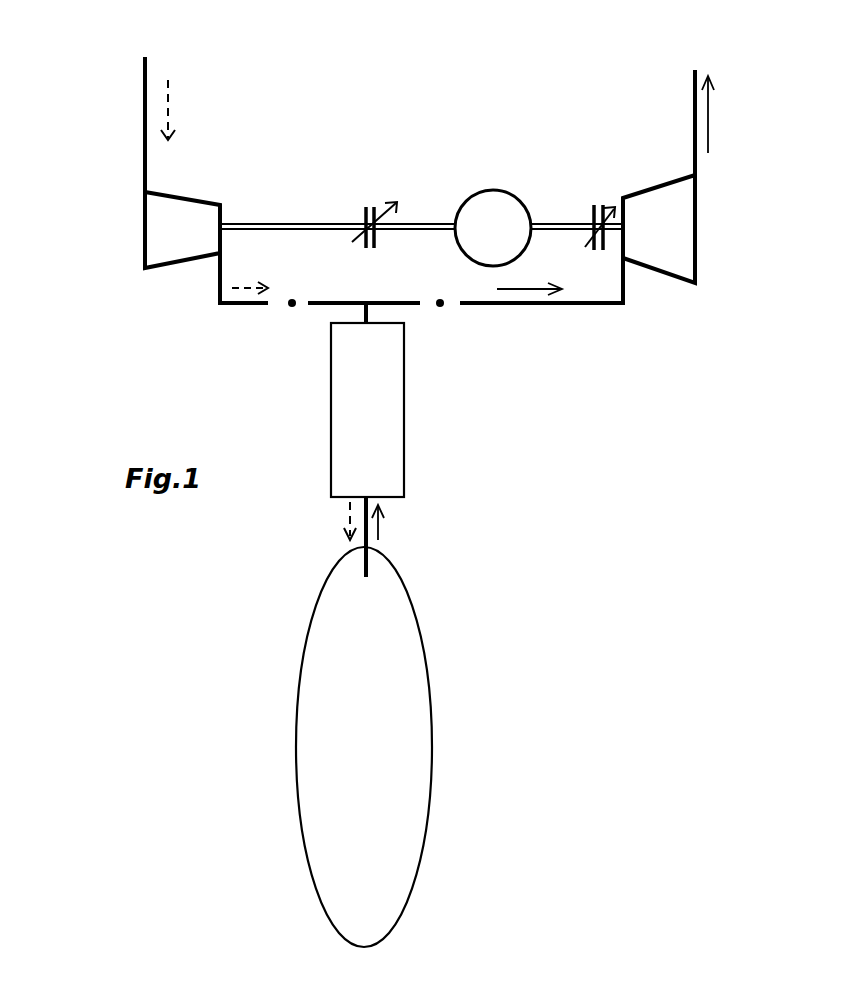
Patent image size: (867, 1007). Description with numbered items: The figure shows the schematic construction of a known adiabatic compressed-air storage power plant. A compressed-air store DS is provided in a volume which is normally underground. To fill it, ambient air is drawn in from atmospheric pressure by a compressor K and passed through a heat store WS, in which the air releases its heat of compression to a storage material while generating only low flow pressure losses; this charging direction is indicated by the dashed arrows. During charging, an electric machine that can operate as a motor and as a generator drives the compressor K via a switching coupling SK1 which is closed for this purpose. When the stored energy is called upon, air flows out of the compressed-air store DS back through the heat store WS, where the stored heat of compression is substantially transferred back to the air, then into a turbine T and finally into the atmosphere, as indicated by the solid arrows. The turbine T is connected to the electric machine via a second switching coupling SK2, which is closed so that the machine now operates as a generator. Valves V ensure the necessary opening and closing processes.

The compressor K is at (182, 230).
The turbine T is at (659, 229).
The switching coupling SK1 is at (374, 201).
The second switching coupling SK2 is at (609, 202).
The valves V is at (368, 282).
The heat store WS is at (367, 399).
The compressed-air store DS is at (364, 747).